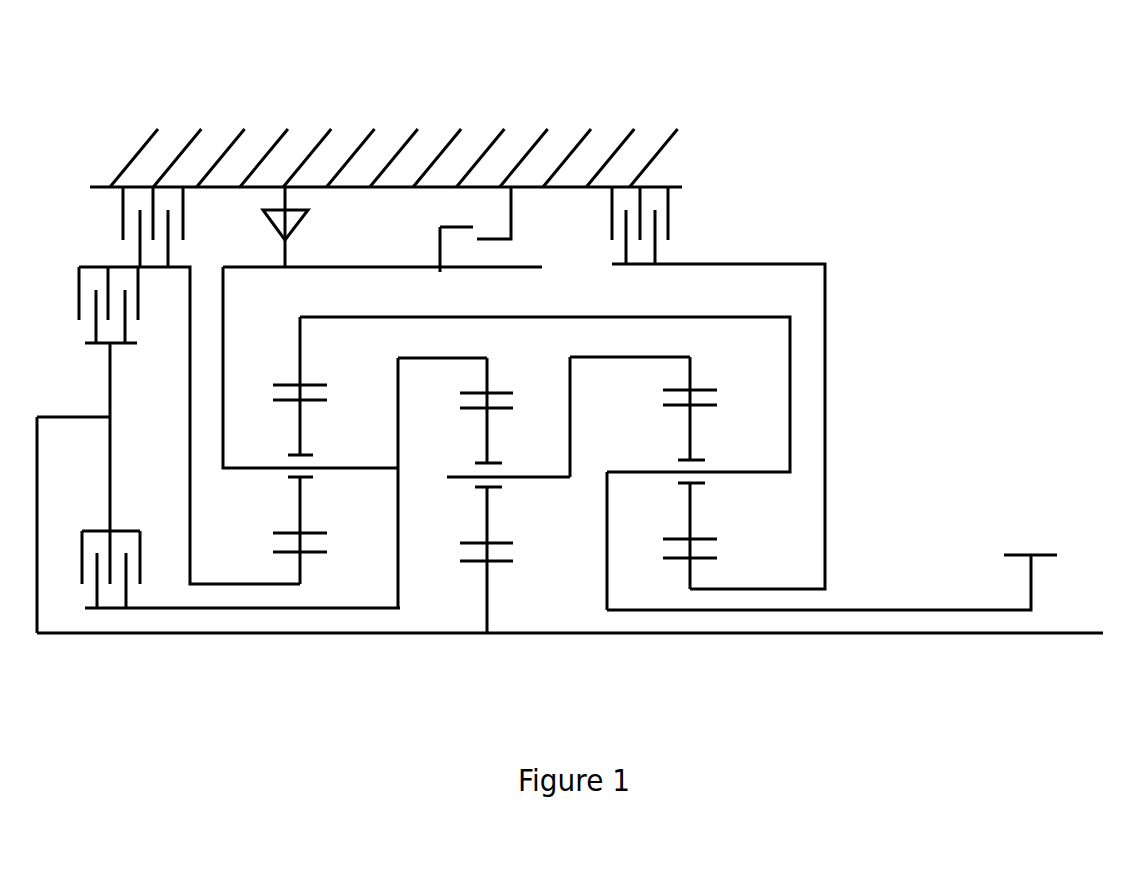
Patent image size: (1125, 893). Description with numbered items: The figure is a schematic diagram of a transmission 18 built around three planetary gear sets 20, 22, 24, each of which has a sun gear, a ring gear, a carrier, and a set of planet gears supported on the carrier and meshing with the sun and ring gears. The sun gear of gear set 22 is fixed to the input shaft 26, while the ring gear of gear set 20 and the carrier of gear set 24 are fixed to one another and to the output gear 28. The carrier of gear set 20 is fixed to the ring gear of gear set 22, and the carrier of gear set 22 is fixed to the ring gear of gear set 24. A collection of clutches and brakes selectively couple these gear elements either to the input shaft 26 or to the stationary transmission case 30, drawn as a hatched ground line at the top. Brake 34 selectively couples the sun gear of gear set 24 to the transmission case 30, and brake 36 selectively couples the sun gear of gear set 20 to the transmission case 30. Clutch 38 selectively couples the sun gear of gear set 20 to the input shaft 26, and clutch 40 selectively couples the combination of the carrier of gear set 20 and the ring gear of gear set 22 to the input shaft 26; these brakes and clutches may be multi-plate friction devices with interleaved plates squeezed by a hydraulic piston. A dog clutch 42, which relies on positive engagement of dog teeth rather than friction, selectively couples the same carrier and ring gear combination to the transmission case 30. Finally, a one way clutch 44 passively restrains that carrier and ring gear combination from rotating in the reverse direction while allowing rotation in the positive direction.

The transmission 18 is at (440, 103).
The planetary gear set 20 is at (531, 506).
The planetary gear set 22 is at (484, 527).
The planetary gear set 24 is at (643, 526).
The input shaft 26 is at (1013, 633).
The output gear 28 is at (1032, 572).
The transmission case 30 is at (309, 152).
The brake 34 is at (668, 215).
The brake 36 is at (123, 218).
The clutch 38 is at (142, 283).
The clutch 40 is at (142, 556).
The dog clutch 42 is at (512, 227).
The one way clutch 44 is at (308, 230).